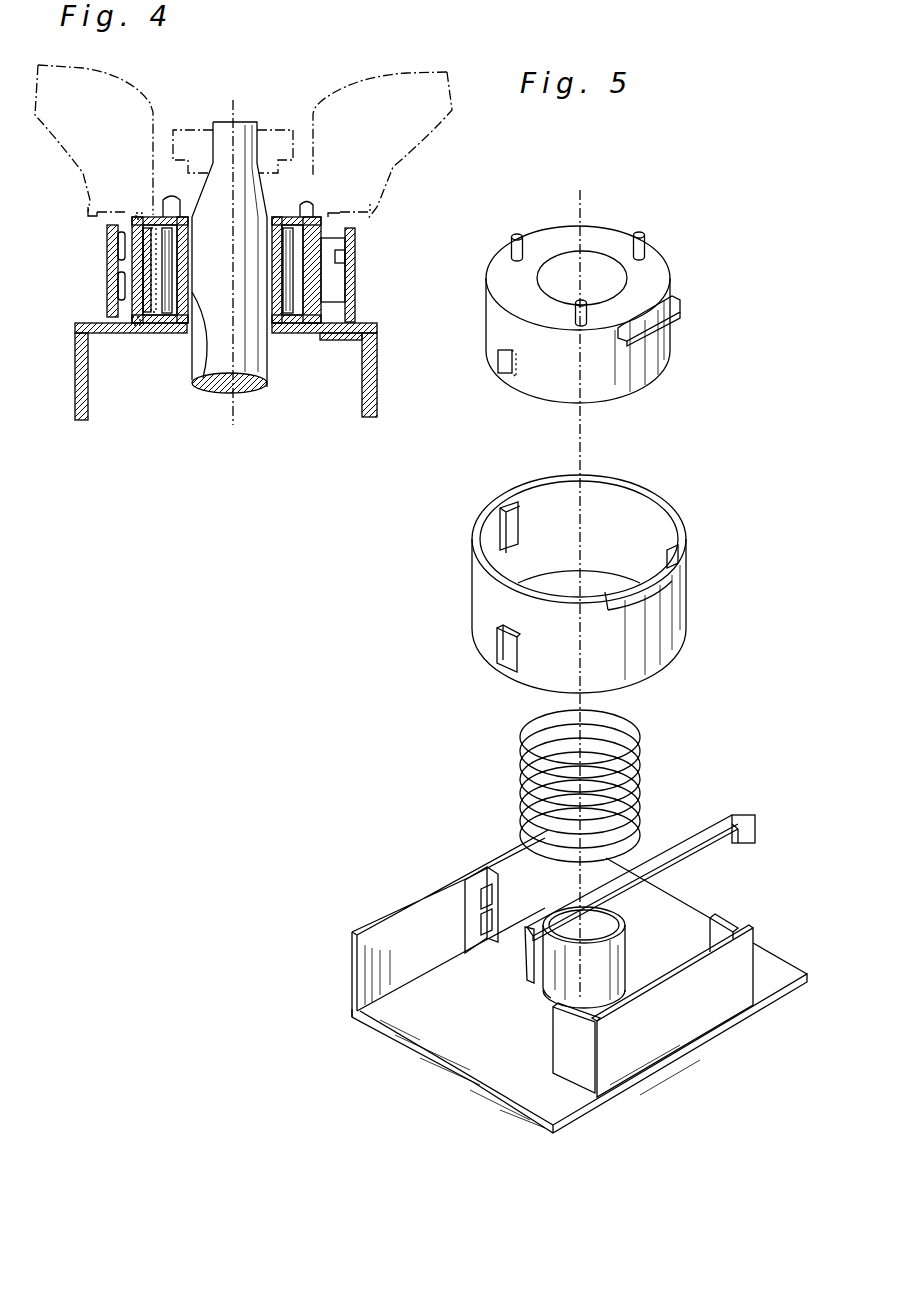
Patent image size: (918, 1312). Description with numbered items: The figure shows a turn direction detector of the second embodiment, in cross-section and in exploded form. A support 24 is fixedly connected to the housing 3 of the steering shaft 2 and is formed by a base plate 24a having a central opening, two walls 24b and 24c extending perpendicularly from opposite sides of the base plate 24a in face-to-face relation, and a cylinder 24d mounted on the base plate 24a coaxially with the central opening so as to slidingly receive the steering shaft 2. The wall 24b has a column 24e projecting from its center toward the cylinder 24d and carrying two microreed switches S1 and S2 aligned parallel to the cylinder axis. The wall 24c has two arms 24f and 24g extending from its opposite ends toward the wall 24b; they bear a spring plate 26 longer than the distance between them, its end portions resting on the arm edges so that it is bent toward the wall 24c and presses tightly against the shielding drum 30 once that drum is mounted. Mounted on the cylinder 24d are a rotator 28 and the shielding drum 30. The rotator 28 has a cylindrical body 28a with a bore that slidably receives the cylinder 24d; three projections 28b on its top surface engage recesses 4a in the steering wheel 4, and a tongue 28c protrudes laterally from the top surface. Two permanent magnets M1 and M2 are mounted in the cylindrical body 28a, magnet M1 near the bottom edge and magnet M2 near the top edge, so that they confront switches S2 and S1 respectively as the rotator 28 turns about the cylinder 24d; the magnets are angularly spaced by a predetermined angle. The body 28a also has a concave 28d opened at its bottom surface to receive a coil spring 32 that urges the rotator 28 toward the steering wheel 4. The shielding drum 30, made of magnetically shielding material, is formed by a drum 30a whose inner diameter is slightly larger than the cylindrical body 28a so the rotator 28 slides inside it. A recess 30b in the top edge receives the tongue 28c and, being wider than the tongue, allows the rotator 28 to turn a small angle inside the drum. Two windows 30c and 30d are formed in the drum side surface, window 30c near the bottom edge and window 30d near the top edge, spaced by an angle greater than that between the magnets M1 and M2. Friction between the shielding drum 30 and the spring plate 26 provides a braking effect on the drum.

In FIG. 4, the steering shaft 2 is at (238, 357).
In FIG. 4, the housing 3 is at (75, 395).
In FIG. 4, the steering wheel 4 is at (368, 88).
In FIG. 4, the recesses 4a is at (163, 200).
In FIG. 5, the support 24 is at (527, 960).
In FIG. 4, the base plate 24a is at (310, 334).
In FIG. 5, the base plate 24a is at (467, 1058).
In FIG. 4, the wall 24b is at (97, 216).
In FIG. 5, the wall 24b is at (397, 940).
In FIG. 5, the wall 24c is at (707, 1003).
In FIG. 4, the cylinder 24d is at (205, 395).
In FIG. 5, the cylinder 24d is at (603, 980).
In FIG. 4, the column 24e is at (110, 265).
In FIG. 5, the column 24e is at (431, 858).
In FIG. 5, the arm 24f is at (580, 1053).
In FIG. 4, the arm 24g is at (340, 248).
In FIG. 5, the arm 24g is at (722, 922).
In FIG. 4, the spring plate 26 is at (337, 263).
In FIG. 5, the spring plate 26 is at (702, 843).
In FIG. 5, the rotator 28 is at (624, 294).
In FIG. 4, the cylindrical body 28a is at (313, 300).
In FIG. 5, the cylindrical body 28a is at (653, 362).
In FIG. 4, the projections 28b is at (172, 207).
In FIG. 5, the projections 28b is at (518, 233).
In FIG. 5, the tongue 28c is at (680, 308).
In FIG. 4, the concave 28d is at (307, 207).
In FIG. 5, the shielding drum 30 is at (586, 570).
In FIG. 4, the drum 30a is at (327, 278).
In FIG. 5, the drum 30a is at (667, 625).
In FIG. 5, the recess 30b is at (667, 577).
In FIG. 4, the window 30c is at (137, 327).
In FIG. 5, the window 30c is at (498, 640).
In FIG. 4, the window 30d is at (140, 213).
In FIG. 5, the window 30d is at (503, 518).
In FIG. 4, the coil spring 32 is at (287, 316).
In FIG. 5, the coil spring 32 is at (637, 765).
In FIG. 4, the microreed switch S1 is at (110, 238).
In FIG. 5, the microreed switch S1 is at (486, 893).
In FIG. 4, the microreed switch S2 is at (110, 293).
In FIG. 5, the microreed switch S2 is at (484, 922).
In FIG. 4, the permanent magnet M1 is at (152, 327).
In FIG. 5, the permanent magnet M1 is at (500, 372).
In FIG. 4, the permanent magnet M2 is at (153, 215).